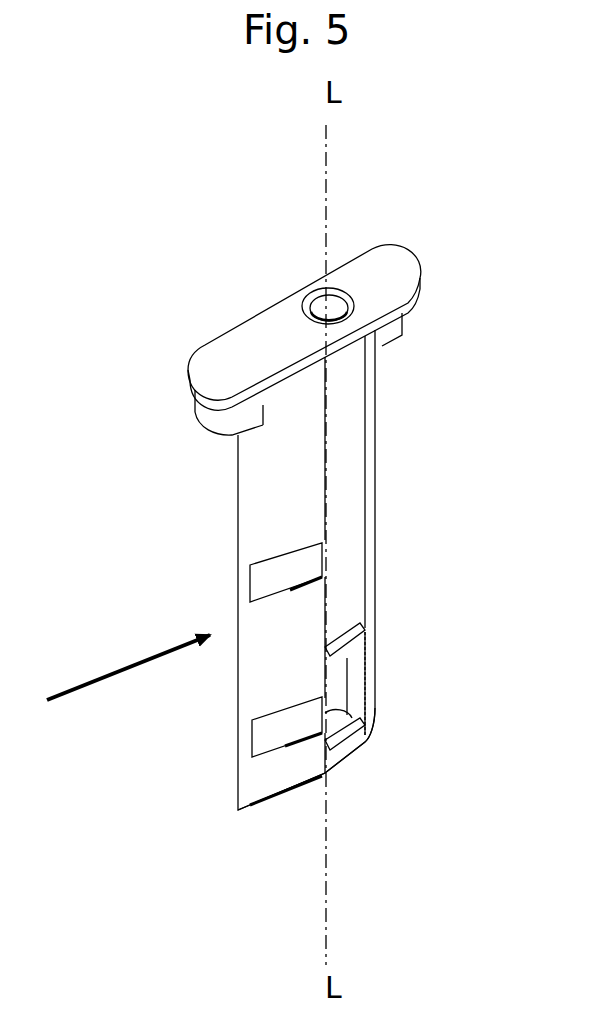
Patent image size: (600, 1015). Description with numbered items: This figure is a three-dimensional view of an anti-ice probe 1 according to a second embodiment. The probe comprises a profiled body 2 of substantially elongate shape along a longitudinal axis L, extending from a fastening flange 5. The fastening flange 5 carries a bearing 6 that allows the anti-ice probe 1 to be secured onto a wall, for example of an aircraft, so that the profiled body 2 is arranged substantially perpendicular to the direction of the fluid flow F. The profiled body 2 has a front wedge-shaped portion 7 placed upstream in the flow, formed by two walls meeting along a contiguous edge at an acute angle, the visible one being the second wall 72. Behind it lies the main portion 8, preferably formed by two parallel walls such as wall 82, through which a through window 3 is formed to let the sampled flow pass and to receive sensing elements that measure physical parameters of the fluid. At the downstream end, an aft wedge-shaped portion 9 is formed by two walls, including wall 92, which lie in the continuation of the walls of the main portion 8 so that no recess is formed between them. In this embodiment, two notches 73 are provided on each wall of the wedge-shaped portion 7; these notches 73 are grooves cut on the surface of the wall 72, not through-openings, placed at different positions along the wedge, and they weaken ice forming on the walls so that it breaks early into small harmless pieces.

The anti-ice probe 1 is at (168, 390).
The profiled body 2 is at (178, 572).
The through window 3 is at (333, 680).
The fastening flange 5 is at (442, 262).
The bearing 6 is at (403, 305).
The wedge-shaped portion 7 is at (269, 811).
The main portion 8 is at (346, 782).
The aft wedge-shaped portion 9 is at (390, 762).
The second wall 72 is at (265, 773).
The notches 73 is at (278, 733).
The wall of the main portion 82 is at (352, 528).
The wall of the aft wedge-shaped portion 92 is at (373, 690).